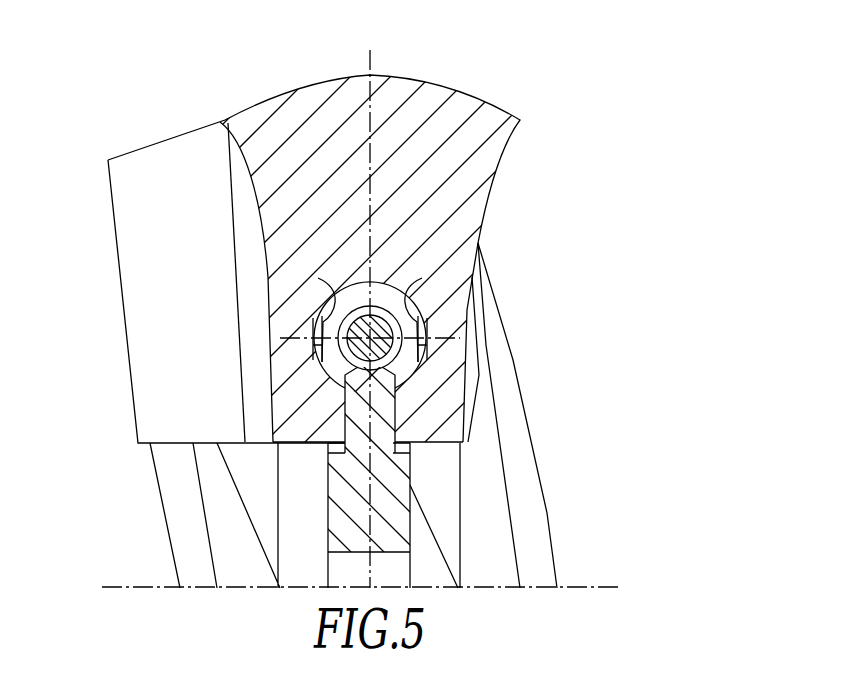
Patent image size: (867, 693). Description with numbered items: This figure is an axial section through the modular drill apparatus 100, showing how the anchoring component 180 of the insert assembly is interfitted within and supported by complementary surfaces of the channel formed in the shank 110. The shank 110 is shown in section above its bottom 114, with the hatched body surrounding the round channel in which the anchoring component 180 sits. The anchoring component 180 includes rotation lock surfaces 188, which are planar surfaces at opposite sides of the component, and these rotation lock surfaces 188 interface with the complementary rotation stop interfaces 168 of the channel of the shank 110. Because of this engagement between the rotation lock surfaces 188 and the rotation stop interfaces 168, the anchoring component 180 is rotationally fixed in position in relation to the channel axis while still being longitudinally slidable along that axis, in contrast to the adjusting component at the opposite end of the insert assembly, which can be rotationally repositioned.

The modular drill apparatus 100 is at (468, 91).
The shank 110 is at (160, 487).
The bottom 114 is at (290, 440).
The rotation stop interfaces 168 is at (330, 307).
The anchoring component 180 is at (399, 372).
The rotation lock surfaces 188 is at (312, 347).